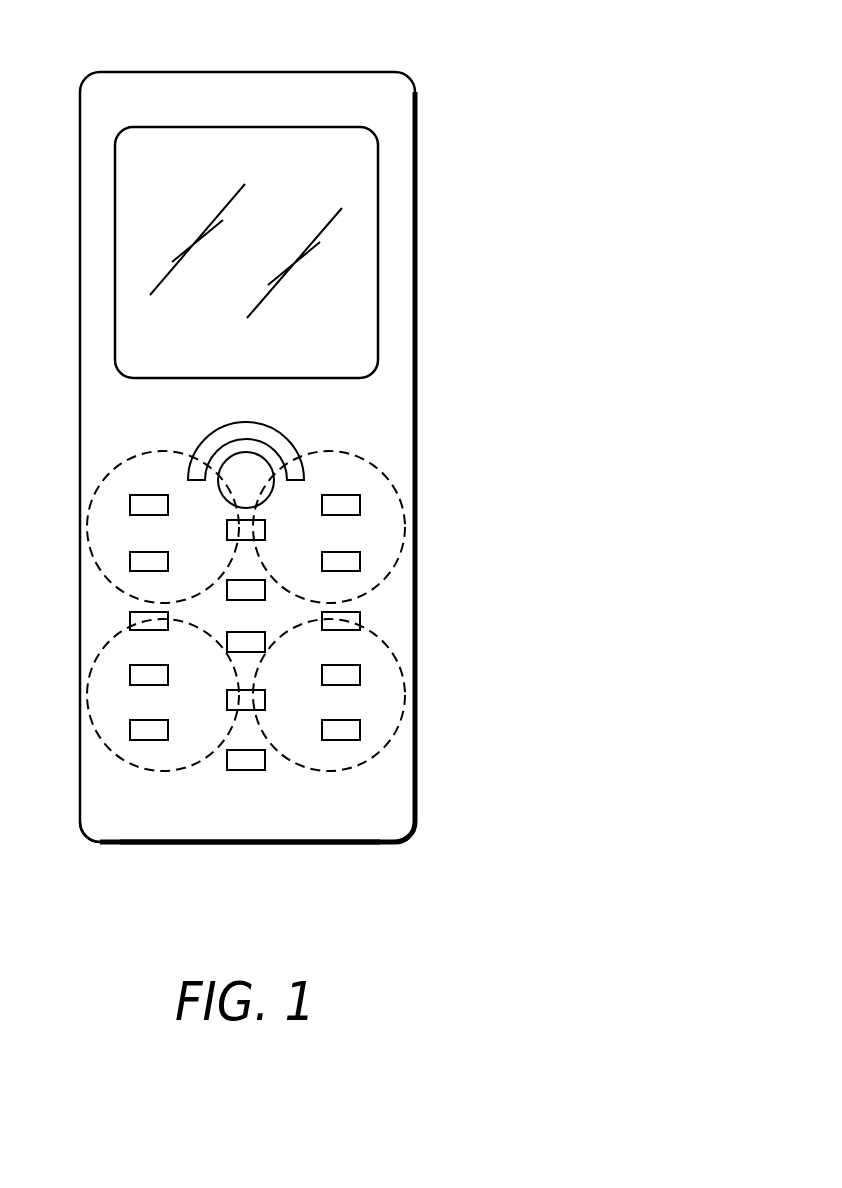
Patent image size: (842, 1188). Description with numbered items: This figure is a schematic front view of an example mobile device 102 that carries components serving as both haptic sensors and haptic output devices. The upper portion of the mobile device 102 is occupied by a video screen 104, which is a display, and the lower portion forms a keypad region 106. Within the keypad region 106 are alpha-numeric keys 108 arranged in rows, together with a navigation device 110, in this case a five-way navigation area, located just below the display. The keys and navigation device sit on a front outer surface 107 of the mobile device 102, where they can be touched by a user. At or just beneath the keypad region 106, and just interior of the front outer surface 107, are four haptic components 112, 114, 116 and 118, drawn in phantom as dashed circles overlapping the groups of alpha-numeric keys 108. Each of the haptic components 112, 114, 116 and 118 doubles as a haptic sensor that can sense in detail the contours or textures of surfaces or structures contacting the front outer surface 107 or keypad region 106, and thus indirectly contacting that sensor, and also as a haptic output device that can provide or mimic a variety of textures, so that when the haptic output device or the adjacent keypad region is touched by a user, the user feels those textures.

The mobile device 102 is at (418, 56).
The video screen 104 is at (348, 127).
The keypad region 106 is at (100, 827).
The front outer surface 107 is at (183, 830).
The alpha-numeric keys 108 is at (150, 495).
The navigation device 110 is at (300, 426).
The haptic component 112 is at (110, 600).
The haptic component 114 is at (115, 760).
The haptic component 116 is at (373, 461).
The haptic component 118 is at (342, 774).